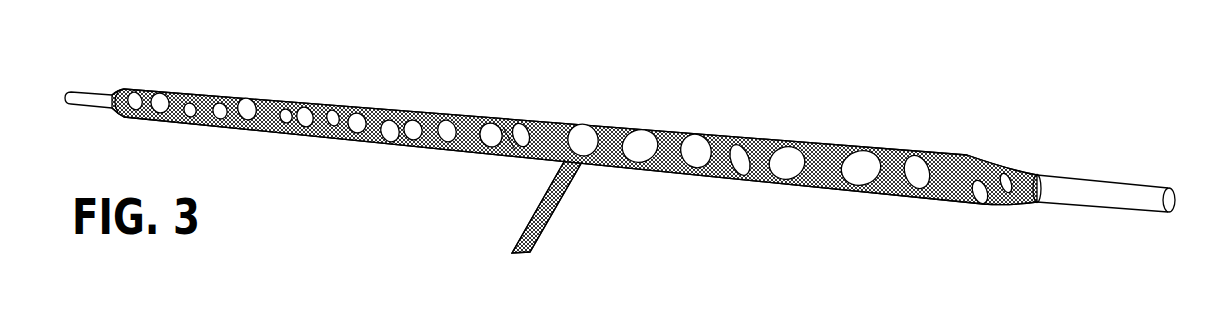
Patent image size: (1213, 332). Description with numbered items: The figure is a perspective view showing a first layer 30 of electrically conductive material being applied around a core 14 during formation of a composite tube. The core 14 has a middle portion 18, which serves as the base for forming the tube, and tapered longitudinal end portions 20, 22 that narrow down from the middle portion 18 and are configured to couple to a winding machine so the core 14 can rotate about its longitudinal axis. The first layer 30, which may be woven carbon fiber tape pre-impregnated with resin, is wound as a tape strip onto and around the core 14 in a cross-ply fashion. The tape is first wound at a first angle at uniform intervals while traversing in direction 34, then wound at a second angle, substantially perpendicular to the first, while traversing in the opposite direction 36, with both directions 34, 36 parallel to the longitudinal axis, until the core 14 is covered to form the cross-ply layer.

The core 14 is at (574, 135).
The middle portion 18 is at (628, 130).
The longitudinal end portion 20 is at (106, 92).
The longitudinal end portion 22 is at (1077, 180).
The first layer 30 is at (497, 142).
The direction 34 is at (392, 48).
The direction 36 is at (952, 93).